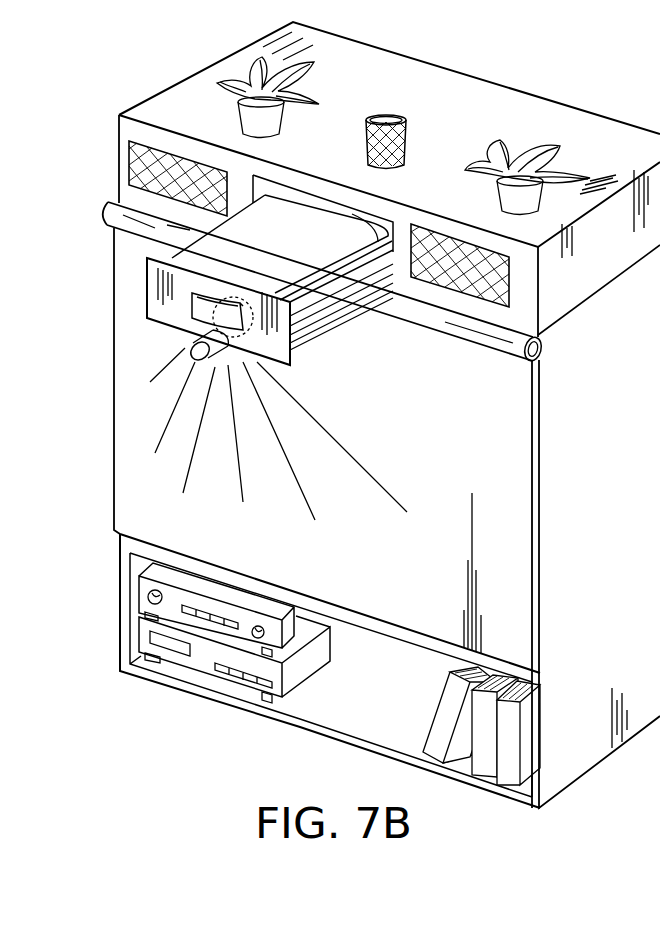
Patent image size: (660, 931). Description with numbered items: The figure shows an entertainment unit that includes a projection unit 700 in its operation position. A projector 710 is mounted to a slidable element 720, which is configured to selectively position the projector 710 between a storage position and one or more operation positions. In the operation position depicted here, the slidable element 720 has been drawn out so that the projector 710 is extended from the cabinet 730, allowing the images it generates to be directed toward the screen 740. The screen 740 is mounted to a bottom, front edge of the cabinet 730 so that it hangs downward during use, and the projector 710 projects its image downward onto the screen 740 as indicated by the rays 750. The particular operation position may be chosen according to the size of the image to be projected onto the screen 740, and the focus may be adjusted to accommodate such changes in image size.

The projection unit 700 is at (94, 119).
The projector 710 is at (290, 249).
The slidable element 720 is at (160, 308).
The cabinet 730 is at (117, 170).
The screen 740 is at (520, 416).
The rays 750 is at (297, 402).